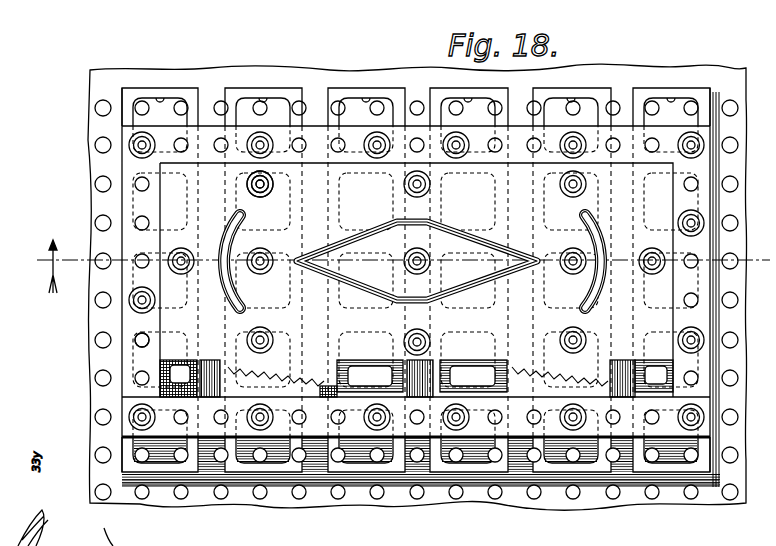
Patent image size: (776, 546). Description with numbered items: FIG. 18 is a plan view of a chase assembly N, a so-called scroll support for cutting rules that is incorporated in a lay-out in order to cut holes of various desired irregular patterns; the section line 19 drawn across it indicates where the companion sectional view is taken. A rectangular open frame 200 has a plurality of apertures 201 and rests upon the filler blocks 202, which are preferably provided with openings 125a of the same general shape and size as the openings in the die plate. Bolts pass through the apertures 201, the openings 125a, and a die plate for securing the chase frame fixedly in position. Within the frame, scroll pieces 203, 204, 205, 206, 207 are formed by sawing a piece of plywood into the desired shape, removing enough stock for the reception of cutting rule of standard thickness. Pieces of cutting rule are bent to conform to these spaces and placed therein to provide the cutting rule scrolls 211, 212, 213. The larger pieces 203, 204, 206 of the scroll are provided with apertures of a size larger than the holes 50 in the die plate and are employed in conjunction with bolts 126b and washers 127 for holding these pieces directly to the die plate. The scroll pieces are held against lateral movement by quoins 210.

The chase assembly N is at (620, 193).
The holes 50 is at (97, 141).
The section line 19 is at (270, 518).
The rectangular open frame 200 is at (128, 320).
The apertures 201 is at (136, 376).
The filler blocks 202 is at (148, 90).
The openings 125a is at (173, 98).
The quoins 210 is at (297, 372).
The bolts 126b is at (181, 250).
The washers 127 is at (257, 275).
The scroll piece 203 is at (444, 191).
The scroll piece 206 is at (391, 264).
The scroll piece 204 is at (444, 335).
The cutting rule scroll 212 is at (320, 243).
The scroll piece 205 is at (233, 294).
The scroll piece 207 is at (589, 282).
The cutting rule scroll 211 is at (225, 230).
The cutting rule scroll 213 is at (587, 221).